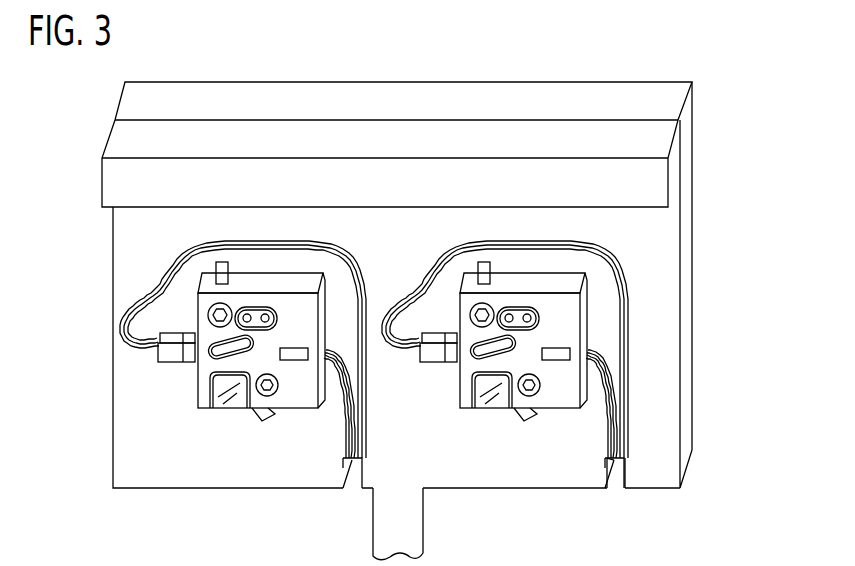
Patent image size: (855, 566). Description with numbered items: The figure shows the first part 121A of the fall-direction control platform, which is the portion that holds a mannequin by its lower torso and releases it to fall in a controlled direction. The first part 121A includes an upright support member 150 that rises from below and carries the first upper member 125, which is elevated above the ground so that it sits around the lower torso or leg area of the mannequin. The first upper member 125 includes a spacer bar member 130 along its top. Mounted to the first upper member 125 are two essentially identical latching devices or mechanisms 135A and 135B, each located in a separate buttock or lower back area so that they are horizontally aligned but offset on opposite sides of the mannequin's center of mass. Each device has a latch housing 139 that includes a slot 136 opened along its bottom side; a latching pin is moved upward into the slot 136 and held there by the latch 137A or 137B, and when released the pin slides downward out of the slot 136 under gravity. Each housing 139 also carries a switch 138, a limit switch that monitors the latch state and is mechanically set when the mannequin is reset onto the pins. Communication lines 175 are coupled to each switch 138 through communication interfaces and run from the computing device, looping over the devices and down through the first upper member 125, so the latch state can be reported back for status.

The first part 121A is at (697, 62).
The spacer bar member 130 is at (650, 183).
The first upper member 125 is at (657, 272).
The communication lines 175 is at (158, 276).
The latching device or mechanism 135A is at (530, 292).
The latching device or mechanism 135B is at (271, 292).
The switch 138 is at (172, 353).
The latch 137A is at (506, 383).
The latch 137B is at (242, 383).
The slot 136 is at (230, 407).
The latch housing 139 is at (290, 405).
The upright support member 150 is at (373, 528).